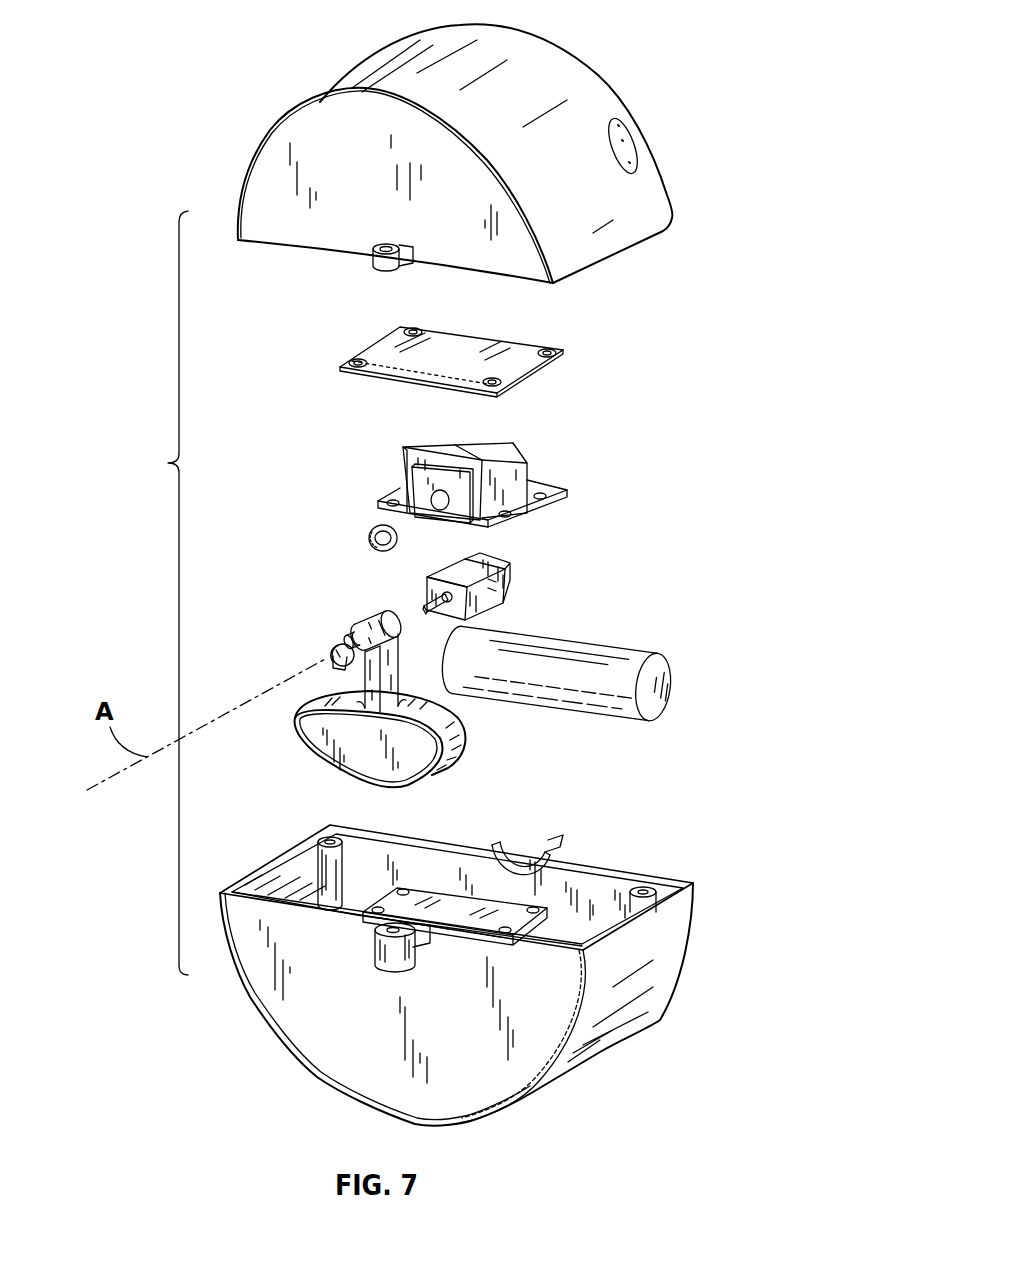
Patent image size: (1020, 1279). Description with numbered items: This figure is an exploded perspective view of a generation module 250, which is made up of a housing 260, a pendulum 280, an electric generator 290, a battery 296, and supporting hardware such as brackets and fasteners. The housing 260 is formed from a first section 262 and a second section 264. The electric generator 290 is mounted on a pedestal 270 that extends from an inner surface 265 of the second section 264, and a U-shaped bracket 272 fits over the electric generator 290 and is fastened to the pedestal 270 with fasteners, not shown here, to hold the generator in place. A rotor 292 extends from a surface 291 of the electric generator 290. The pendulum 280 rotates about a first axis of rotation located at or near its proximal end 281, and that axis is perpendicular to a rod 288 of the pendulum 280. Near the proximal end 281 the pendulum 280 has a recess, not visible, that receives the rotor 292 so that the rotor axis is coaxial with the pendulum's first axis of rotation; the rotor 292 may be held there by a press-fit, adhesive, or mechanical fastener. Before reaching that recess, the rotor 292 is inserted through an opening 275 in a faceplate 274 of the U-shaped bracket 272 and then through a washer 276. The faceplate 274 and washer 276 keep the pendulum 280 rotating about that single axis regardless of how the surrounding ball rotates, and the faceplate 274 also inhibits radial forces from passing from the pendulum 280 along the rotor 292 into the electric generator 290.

The generation module 250 is at (665, 384).
The housing 260 is at (149, 593).
The first section 262 is at (580, 87).
The second section 264 is at (630, 1000).
The inner surface 265 is at (598, 897).
The pedestal 270 is at (503, 915).
The U-shaped bracket 272 is at (513, 467).
The faceplate 274 is at (410, 480).
The opening 275 is at (425, 500).
The washer 276 is at (372, 533).
The pendulum 280 is at (293, 723).
The proximal end 281 is at (377, 612).
The rod 288 is at (393, 672).
The electric generator 290 is at (510, 593).
The surface 291 is at (490, 553).
The rotor 292 is at (427, 590).
The battery 296 is at (608, 657).